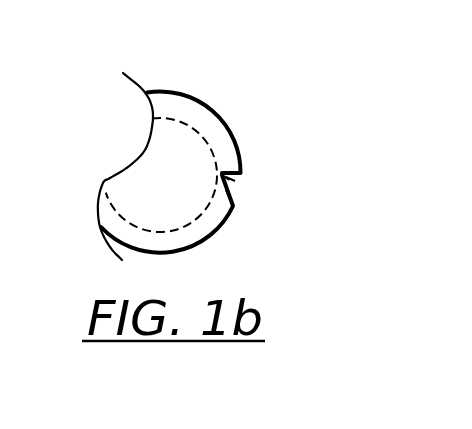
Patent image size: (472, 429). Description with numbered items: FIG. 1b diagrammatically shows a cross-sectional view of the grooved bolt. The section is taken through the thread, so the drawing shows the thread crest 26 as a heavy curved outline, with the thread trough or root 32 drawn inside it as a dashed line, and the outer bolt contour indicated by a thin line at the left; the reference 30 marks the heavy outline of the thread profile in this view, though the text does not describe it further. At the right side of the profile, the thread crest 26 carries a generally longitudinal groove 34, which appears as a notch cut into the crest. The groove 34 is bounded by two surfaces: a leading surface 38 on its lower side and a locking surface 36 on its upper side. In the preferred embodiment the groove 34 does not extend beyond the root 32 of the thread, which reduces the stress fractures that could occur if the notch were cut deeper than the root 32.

The thread crest 26 is at (219, 112).
The peripheral rim 30 is at (187, 95).
The thread root 32 is at (208, 146).
The groove 34 is at (236, 184).
The locking surface 36 is at (230, 182).
The leading surface 38 is at (233, 208).